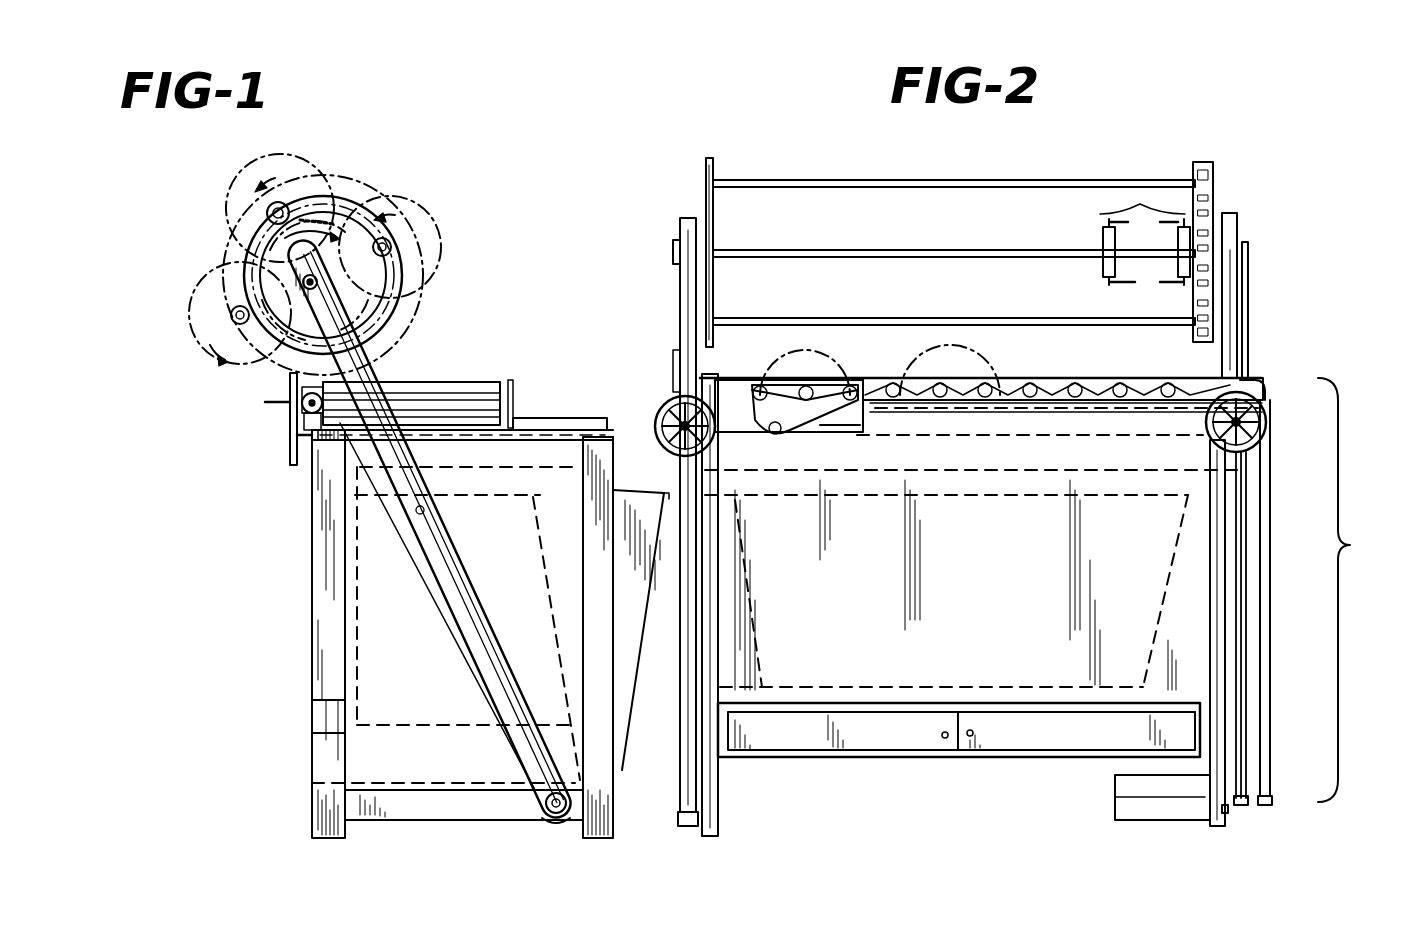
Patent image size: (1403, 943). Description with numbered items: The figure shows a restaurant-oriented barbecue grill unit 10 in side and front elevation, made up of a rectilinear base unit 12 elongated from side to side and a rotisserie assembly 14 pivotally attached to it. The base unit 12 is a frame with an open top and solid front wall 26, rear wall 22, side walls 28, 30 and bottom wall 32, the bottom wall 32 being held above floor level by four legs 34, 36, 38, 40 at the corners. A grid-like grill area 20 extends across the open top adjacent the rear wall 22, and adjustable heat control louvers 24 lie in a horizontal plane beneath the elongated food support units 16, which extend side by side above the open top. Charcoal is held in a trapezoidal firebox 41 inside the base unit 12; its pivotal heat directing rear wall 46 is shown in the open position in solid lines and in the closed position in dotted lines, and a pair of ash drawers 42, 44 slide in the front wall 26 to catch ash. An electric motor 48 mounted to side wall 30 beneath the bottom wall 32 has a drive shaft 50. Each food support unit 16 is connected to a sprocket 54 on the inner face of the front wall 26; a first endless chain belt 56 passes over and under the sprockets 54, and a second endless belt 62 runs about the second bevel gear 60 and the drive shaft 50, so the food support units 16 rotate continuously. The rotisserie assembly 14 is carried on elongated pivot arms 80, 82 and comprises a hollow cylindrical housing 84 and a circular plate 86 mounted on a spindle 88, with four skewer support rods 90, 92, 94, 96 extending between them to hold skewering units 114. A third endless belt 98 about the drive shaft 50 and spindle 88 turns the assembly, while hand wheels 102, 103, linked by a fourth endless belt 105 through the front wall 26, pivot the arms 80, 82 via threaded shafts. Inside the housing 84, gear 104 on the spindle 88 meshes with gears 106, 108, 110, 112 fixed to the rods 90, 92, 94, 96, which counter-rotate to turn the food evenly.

In FIG. 1, the barbecue grill unit 10 is at (520, 153).
In FIG. 2, the barbecue grill unit 10 is at (1057, 776).
In FIG. 1, the base unit 12 is at (262, 596).
In FIG. 2, the base unit 12 is at (1351, 590).
In FIG. 1, the rotisserie assembly 14 is at (207, 364).
In FIG. 2, the rotisserie assembly 14 is at (1236, 192).
In FIG. 1, the food support units 16 is at (470, 384).
In FIG. 1, the grill area 20 is at (540, 418).
In FIG. 1, the rear wall 22 is at (614, 448).
In FIG. 1, the heat control louvers 24 is at (488, 471).
In FIG. 2, the heat control louvers 24 is at (878, 472).
In FIG. 2, the front wall 26 is at (1190, 685).
In FIG. 2, the side wall 28 is at (692, 655).
In FIG. 1, the side wall 30 is at (320, 498).
In FIG. 2, the side wall 30 is at (1250, 585).
In FIG. 2, the bottom wall 32 is at (793, 765).
In FIG. 2, the leg 34 is at (720, 816).
In FIG. 2, the leg 36 is at (686, 826).
In FIG. 1, the leg 38 is at (614, 808).
In FIG. 2, the leg 38 is at (1246, 806).
In FIG. 1, the leg 40 is at (325, 698).
In FIG. 2, the leg 40 is at (1226, 814).
In FIG. 1, the firebox 41 is at (370, 650).
In FIG. 2, the firebox 41 is at (1140, 555).
In FIG. 2, the ash drawer 42 is at (875, 745).
In FIG. 1, the ash drawer 44 is at (380, 766).
In FIG. 2, the ash drawer 44 is at (1000, 745).
In FIG. 1, the heat directing rear wall 46 is at (640, 595).
In FIG. 1, the electric motor 48 is at (558, 815).
In FIG. 2, the electric motor 48 is at (1170, 805).
In FIG. 1, the drive shaft 50 is at (546, 818).
In FIG. 2, the drive shaft 50 is at (1273, 798).
In FIG. 2, the sprocket 54 is at (805, 367).
In FIG. 2, the first endless chain belt 56 is at (1063, 374).
In FIG. 1, the second bevel gear 60 is at (300, 397).
In FIG. 2, the second bevel gear 60 is at (1262, 378).
In FIG. 1, the second endless belt 62 is at (325, 456).
In FIG. 2, the second endless belt 62 is at (1258, 478).
In FIG. 1, the pivot arm 80 is at (415, 452).
In FIG. 2, the pivot arm 80 is at (1240, 222).
In FIG. 2, the pivot arm 82 is at (684, 297).
In FIG. 1, the cylindrical housing 84 is at (245, 252).
In FIG. 2, the cylindrical housing 84 is at (1205, 162).
In FIG. 2, the circular plate 86 is at (706, 165).
In FIG. 1, the spindle 88 is at (340, 288).
In FIG. 2, the spindle 88 is at (707, 218).
In FIG. 1, the skewer support rod 90 is at (400, 236).
In FIG. 2, the skewer support rod 90 is at (917, 250).
In FIG. 1, the skewer support rod 92 is at (283, 205).
In FIG. 2, the skewer support rod 92 is at (918, 180).
In FIG. 1, the skewer support rod 94 is at (228, 293).
In FIG. 1, the skewer support rod 96 is at (378, 312).
In FIG. 2, the skewer support rod 96 is at (898, 318).
In FIG. 1, the third endless belt 98 is at (385, 362).
In FIG. 2, the third endless belt 98 is at (1250, 307).
In FIG. 1, the hand wheel 102 is at (290, 428).
In FIG. 2, the hand wheel 102 is at (1266, 422).
In FIG. 2, the hand wheel 103 is at (678, 404).
In FIG. 1, the gear 104 is at (340, 225).
In FIG. 2, the fourth endless belt 105 is at (752, 447).
In FIG. 1, the gear 106 is at (395, 262).
In FIG. 1, the gear 108 is at (286, 205).
In FIG. 1, the gear 110 is at (227, 320).
In FIG. 1, the gear 112 is at (385, 337).
In FIG. 2, the skewering units 114 is at (1145, 232).